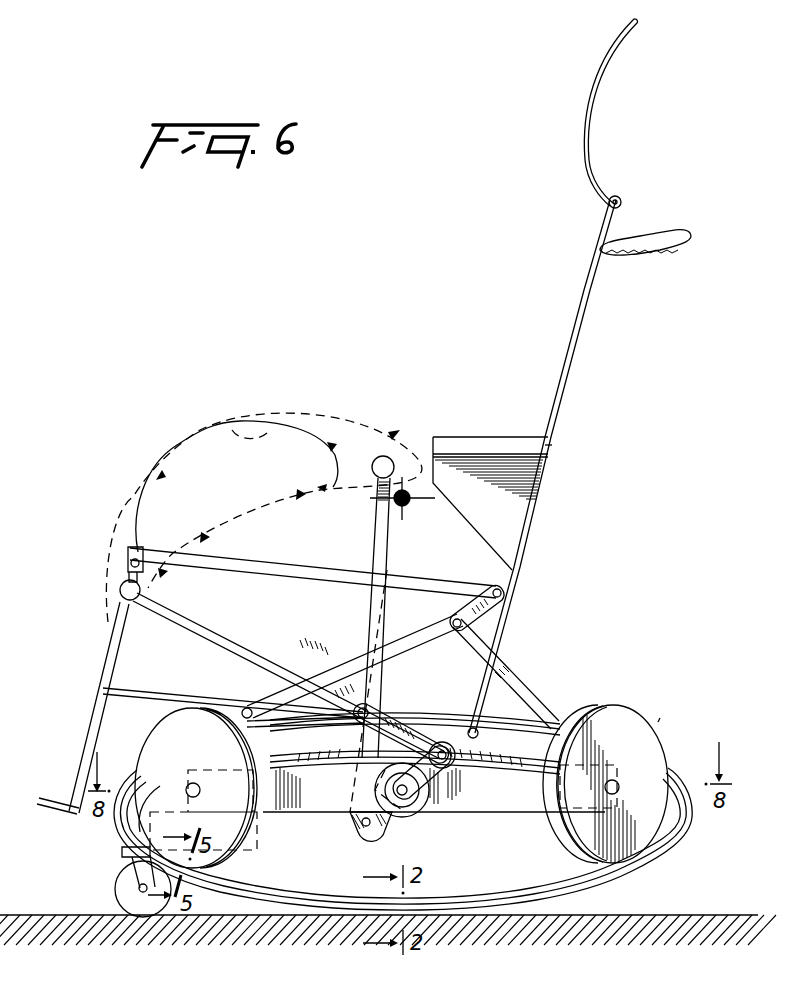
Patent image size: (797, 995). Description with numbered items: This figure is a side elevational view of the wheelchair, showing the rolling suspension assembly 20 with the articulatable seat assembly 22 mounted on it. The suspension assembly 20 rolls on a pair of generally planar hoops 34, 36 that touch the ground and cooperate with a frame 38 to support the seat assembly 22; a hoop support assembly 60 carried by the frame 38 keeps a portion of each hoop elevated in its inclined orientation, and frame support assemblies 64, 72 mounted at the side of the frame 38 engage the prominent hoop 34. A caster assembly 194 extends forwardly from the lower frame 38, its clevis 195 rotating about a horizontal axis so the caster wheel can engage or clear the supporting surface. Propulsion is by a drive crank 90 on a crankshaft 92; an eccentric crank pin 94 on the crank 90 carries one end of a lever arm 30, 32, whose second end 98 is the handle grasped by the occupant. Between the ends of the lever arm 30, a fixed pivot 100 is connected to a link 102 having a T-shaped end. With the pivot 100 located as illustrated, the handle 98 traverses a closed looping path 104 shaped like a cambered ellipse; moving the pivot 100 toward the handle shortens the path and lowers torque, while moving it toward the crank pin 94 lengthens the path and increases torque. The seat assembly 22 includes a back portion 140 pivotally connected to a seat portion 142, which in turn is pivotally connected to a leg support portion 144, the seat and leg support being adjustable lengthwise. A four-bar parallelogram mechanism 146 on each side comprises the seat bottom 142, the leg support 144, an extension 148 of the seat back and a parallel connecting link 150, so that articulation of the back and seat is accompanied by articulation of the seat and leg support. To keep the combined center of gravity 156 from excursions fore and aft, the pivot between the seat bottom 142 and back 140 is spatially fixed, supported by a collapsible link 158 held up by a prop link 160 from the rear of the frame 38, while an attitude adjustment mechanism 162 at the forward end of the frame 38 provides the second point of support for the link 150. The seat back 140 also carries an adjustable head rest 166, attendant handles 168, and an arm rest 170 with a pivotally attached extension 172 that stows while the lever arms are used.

The rolling suspension assembly 20 is at (212, 902).
The seat assembly 22 is at (577, 356).
The lever arm 30 is at (242, 650).
The lever arm 32 is at (385, 560).
The hoop 34 is at (128, 778).
The hoop 36 is at (585, 705).
The frame 38 is at (330, 805).
The hoop support assembly 60 is at (415, 820).
The frame support assembly 64 is at (238, 860).
The frame support assembly 72 is at (654, 725).
The drive crank 90 is at (371, 838).
The crankshaft 92 is at (420, 812).
The crank pin 94 is at (465, 775).
The second end of lever arm 98 is at (390, 460).
The fixed pivot 100 is at (380, 706).
The link 102 is at (282, 815).
The closed looping path 104 is at (298, 425).
The back portion 140 is at (598, 240).
The seat portion 142 is at (270, 567).
The leg support portion 144 is at (92, 728).
The four-bar parallelogram mechanism 146 is at (500, 650).
The extension of the seat back 148 is at (505, 622).
The parallel connecting link 150 is at (147, 695).
The combined center of gravity 156 is at (412, 502).
The collapsible link 158 is at (430, 637).
The prop link 160 is at (252, 706).
The attitude adjustment mechanism 162 is at (240, 706).
The adjustable head rest 166 is at (592, 120).
The attendant handles 168 is at (677, 223).
The arm rest 170 is at (547, 449).
The extension 172 is at (490, 437).
The caster assembly 194 is at (115, 893).
The clevis 195 is at (120, 851).